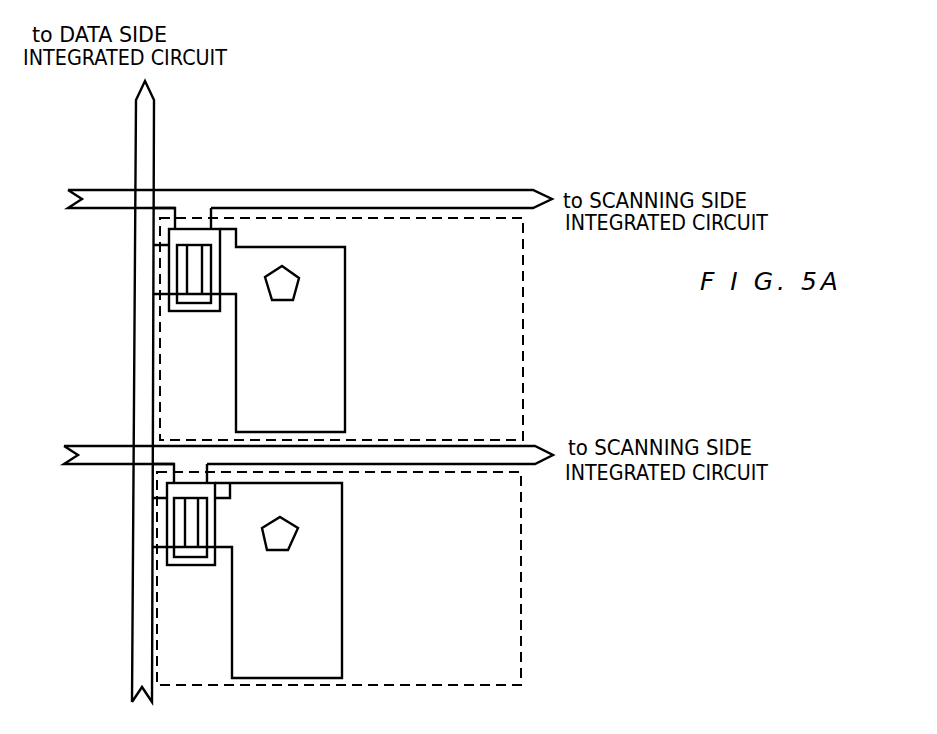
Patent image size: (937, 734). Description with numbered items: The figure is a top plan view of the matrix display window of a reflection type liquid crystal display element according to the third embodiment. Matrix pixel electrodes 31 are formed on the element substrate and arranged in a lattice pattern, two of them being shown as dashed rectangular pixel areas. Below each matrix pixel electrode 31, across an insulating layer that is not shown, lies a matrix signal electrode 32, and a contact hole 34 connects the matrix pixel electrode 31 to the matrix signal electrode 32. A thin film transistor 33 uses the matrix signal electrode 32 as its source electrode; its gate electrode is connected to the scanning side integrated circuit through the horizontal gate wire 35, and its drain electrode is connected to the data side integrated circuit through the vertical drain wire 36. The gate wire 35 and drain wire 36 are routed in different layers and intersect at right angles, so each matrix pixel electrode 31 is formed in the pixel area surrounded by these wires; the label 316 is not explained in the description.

The matrix pixel electrode 31 is at (522, 320).
The matrix signal electrode 32 is at (328, 246).
The thin film transistor 33 is at (217, 226).
The contact hole 34 is at (283, 266).
The gate wire 35 is at (533, 192).
The drain wire 36 is at (137, 142).
The pixel array substrate 316 is at (586, 719).